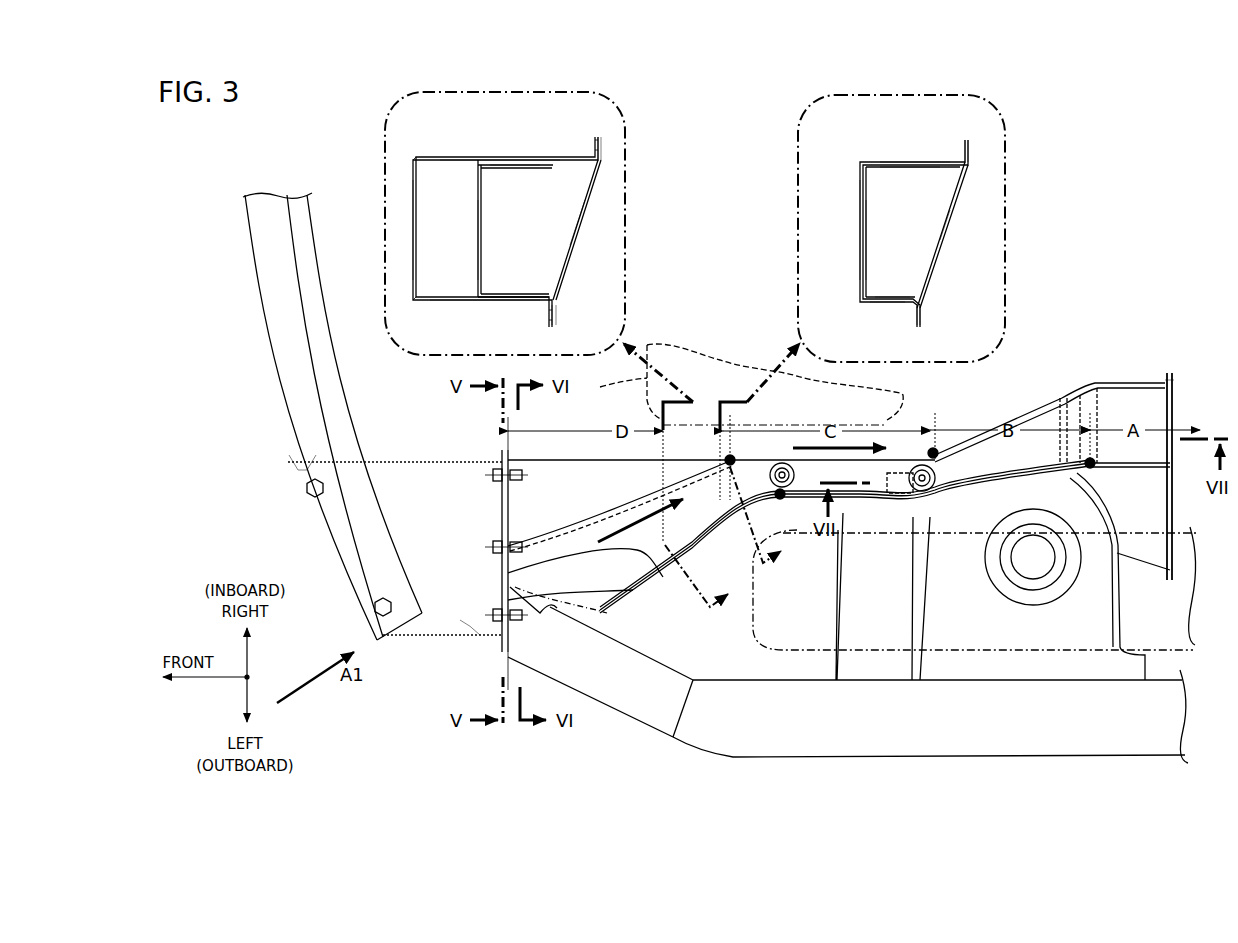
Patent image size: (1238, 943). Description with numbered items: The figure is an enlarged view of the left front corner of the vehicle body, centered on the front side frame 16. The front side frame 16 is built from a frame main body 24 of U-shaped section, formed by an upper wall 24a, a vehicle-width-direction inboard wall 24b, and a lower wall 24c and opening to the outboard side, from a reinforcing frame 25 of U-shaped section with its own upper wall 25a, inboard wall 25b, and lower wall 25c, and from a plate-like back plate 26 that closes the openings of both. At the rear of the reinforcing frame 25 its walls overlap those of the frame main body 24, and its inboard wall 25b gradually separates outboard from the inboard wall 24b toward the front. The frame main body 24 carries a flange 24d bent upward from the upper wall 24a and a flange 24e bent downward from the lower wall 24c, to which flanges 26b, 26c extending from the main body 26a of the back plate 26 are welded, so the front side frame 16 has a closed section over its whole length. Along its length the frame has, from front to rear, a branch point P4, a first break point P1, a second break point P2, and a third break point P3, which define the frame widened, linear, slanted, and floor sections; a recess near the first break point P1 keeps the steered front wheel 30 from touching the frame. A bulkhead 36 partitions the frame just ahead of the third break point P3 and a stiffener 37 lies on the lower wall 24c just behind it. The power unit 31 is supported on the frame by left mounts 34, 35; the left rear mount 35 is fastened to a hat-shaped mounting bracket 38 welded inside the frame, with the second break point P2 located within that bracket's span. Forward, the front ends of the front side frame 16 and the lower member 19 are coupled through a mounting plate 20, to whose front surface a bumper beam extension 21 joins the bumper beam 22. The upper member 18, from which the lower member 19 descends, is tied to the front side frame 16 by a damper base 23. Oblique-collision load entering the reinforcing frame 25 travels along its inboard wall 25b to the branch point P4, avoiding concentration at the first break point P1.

The front side frame 16 is at (520, 150).
The upper member 18 is at (930, 745).
The lower member 19 is at (637, 705).
The mounting plate 20 is at (508, 515).
The bumper beam extension 21 is at (460, 620).
The bumper beam 22 is at (275, 333).
The damper base 23 is at (1113, 600).
The frame main body 24 is at (438, 158).
The upper wall 24a is at (455, 157).
The vehicle-width-direction inboard wall 24b is at (413, 230).
The lower wall 24c is at (452, 303).
The flange 24d is at (597, 143).
The flange 24e is at (548, 318).
The reinforcing frame 25 is at (483, 222).
The upper wall 25a is at (548, 170).
The vehicle-width-direction inboard wall 25b is at (478, 252).
The lower wall 25c is at (512, 295).
The back plate 26 is at (585, 227).
The main body 26a is at (580, 245).
The flange 26b is at (603, 140).
The flange 26c is at (556, 318).
The front wheel 30 is at (753, 632).
The power unit 31 is at (643, 382).
The left mount 34 is at (782, 462).
The left rear mount 35 is at (905, 390).
The bulkhead 36 is at (1050, 413).
The stiffener 37 is at (1170, 407).
The mounting bracket 38 is at (897, 495).
The first break point P1 is at (771, 511).
The second break point P2 is at (937, 470).
The third break point P3 is at (1094, 468).
The branch point P4 is at (765, 510).